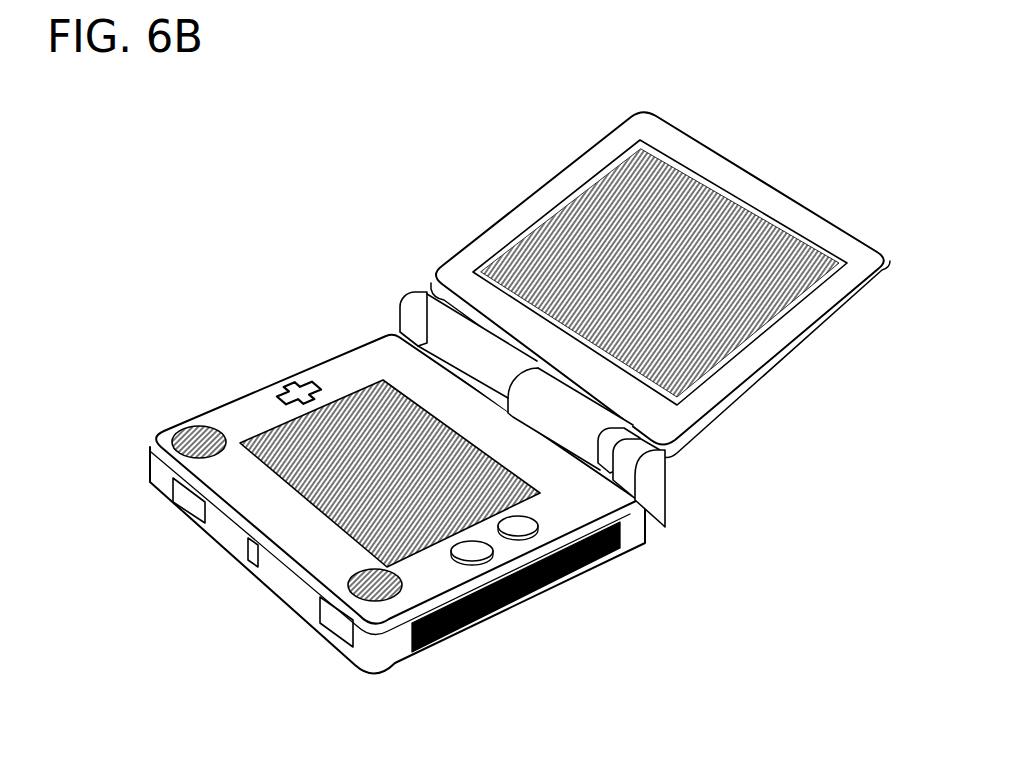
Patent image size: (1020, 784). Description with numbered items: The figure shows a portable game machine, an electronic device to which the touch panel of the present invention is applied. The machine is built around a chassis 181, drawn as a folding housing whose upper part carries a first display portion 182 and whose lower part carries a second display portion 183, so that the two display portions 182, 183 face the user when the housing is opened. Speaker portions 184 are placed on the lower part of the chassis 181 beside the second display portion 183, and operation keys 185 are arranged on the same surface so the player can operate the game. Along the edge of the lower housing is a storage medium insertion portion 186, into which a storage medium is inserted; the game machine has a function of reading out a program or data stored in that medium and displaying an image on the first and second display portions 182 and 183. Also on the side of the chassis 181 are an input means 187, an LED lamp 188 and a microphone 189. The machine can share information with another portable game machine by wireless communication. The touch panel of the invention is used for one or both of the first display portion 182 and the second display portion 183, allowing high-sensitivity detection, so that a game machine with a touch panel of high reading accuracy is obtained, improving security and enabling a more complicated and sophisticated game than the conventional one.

The chassis 181 is at (613, 137).
The first display portion 182 is at (507, 240).
The second display portion 183 is at (377, 387).
The speaker portions 184 is at (183, 430).
The operation keys 185 is at (518, 528).
The storage medium insertion portion 186 is at (523, 587).
The input means 187 is at (190, 502).
The LED lamp 188 is at (250, 555).
The microphone 189 is at (335, 620).